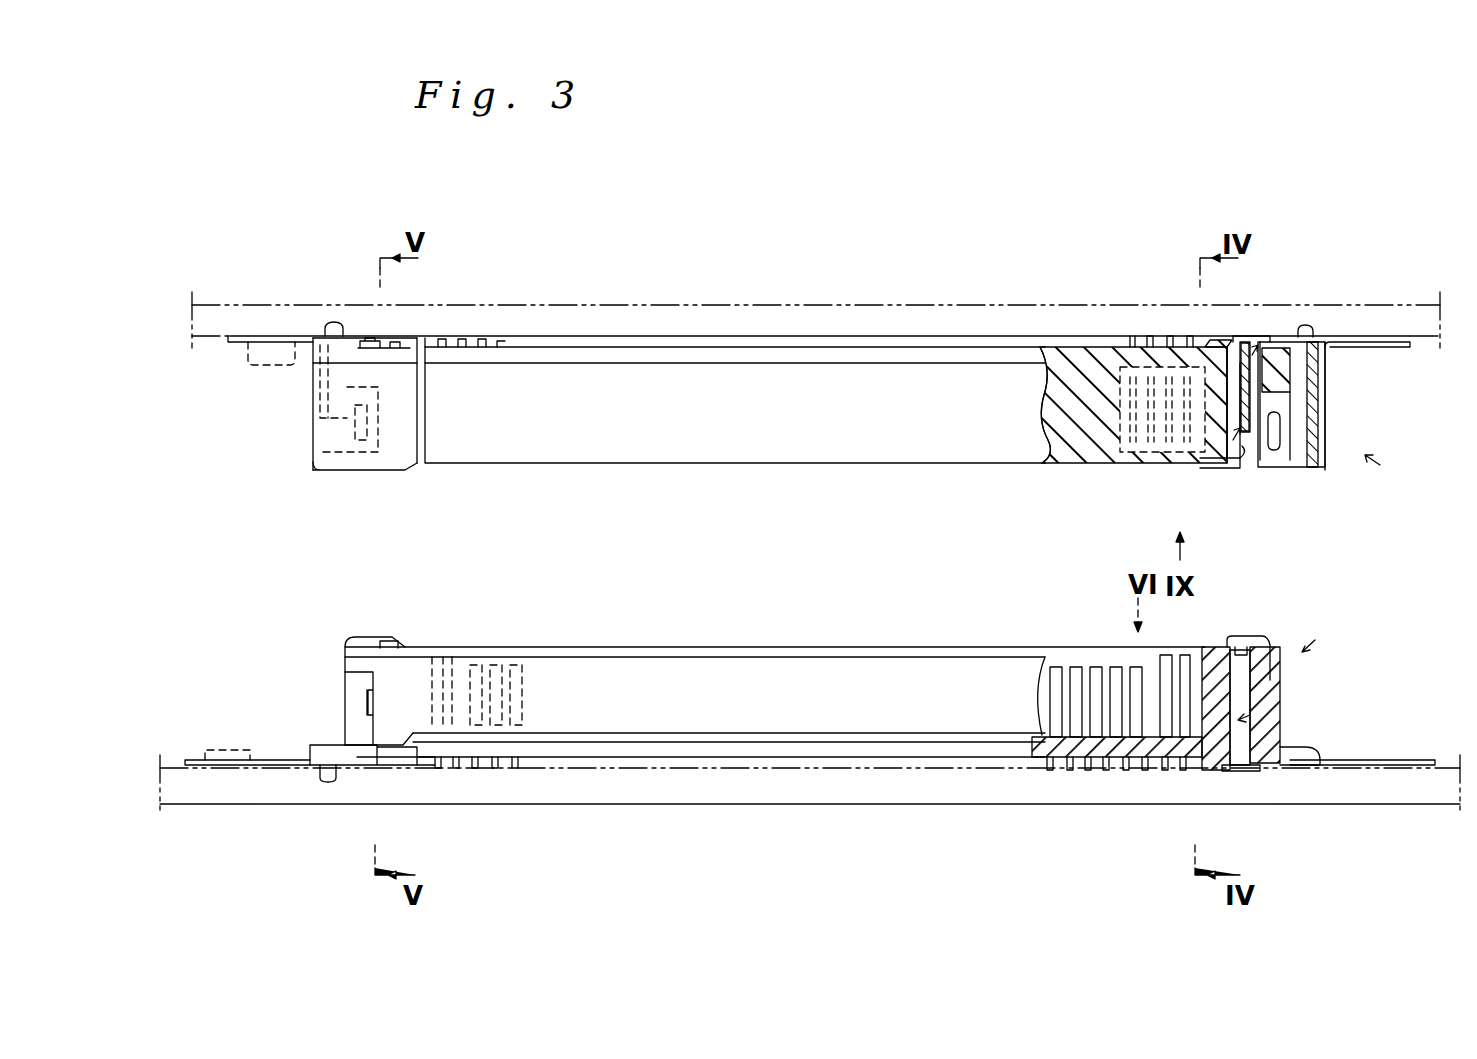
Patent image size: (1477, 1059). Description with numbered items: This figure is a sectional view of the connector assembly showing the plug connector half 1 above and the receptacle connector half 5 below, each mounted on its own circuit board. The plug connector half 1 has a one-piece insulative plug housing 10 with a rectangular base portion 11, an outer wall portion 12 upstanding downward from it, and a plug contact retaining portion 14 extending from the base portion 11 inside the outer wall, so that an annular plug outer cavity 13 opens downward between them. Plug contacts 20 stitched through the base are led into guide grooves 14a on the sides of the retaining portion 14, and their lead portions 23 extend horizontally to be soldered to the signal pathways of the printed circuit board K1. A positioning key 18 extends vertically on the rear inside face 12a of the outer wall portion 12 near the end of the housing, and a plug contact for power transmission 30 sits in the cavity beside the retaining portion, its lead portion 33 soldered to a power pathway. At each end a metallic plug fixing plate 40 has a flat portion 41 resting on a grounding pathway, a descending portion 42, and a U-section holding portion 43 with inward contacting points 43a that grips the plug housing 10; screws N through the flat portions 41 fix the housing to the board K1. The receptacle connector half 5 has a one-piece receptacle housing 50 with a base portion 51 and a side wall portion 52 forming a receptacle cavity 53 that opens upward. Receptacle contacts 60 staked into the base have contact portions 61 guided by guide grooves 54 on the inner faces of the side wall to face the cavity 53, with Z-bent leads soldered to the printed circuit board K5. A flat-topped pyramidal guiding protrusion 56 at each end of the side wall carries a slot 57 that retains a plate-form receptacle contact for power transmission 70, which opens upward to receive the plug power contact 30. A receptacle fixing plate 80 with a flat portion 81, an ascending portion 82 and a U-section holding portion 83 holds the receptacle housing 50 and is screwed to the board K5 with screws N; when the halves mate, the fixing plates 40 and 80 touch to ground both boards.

The plug connector half 1 is at (1380, 465).
The plug housing 10 is at (780, 467).
The base portion 11 is at (835, 340).
The outer wall portion 12 is at (908, 450).
The rear inside face 12a is at (1242, 470).
The plug outer cavity 13 is at (1233, 440).
The plug contact retaining portion 14 is at (1090, 463).
The guide grooves 14a is at (1155, 463).
The positioning key 18 is at (1252, 468).
The plug contacts 20 is at (1160, 335).
The lead portion 23 is at (1210, 338).
The plug contact for power transmission 30 is at (1258, 345).
The lead portion 33 is at (1252, 338).
The plug fixing plate 40 is at (238, 352).
The flat portion 41 is at (298, 375).
The descending portion 42 is at (318, 415).
The holding portion 43 is at (340, 470).
The contacting points 43a is at (380, 462).
The receptacle connector half 5 is at (1315, 640).
The receptacle housing 50 is at (690, 647).
The base portion 51 is at (918, 760).
The side wall portion 52 is at (938, 675).
The receptacle cavity 53 is at (1098, 672).
The guide grooves 54 is at (1185, 737).
The guiding protrusion 56 is at (352, 647).
The slot for retaining a power transmission contact 57 is at (1268, 690).
The receptacle contacts 60 is at (1136, 685).
The contact portion 61 is at (1140, 690).
The receptacle contact for power transmission 70 is at (1250, 715).
The receptacle fixing plate 80 is at (190, 756).
The flat portion 81 is at (268, 758).
The ascending portion 82 is at (1285, 740).
The holding portion 83 is at (350, 692).
The printed circuit board K1 is at (1418, 320).
The printed circuit board K5 is at (1425, 798).
The screws N is at (250, 365).